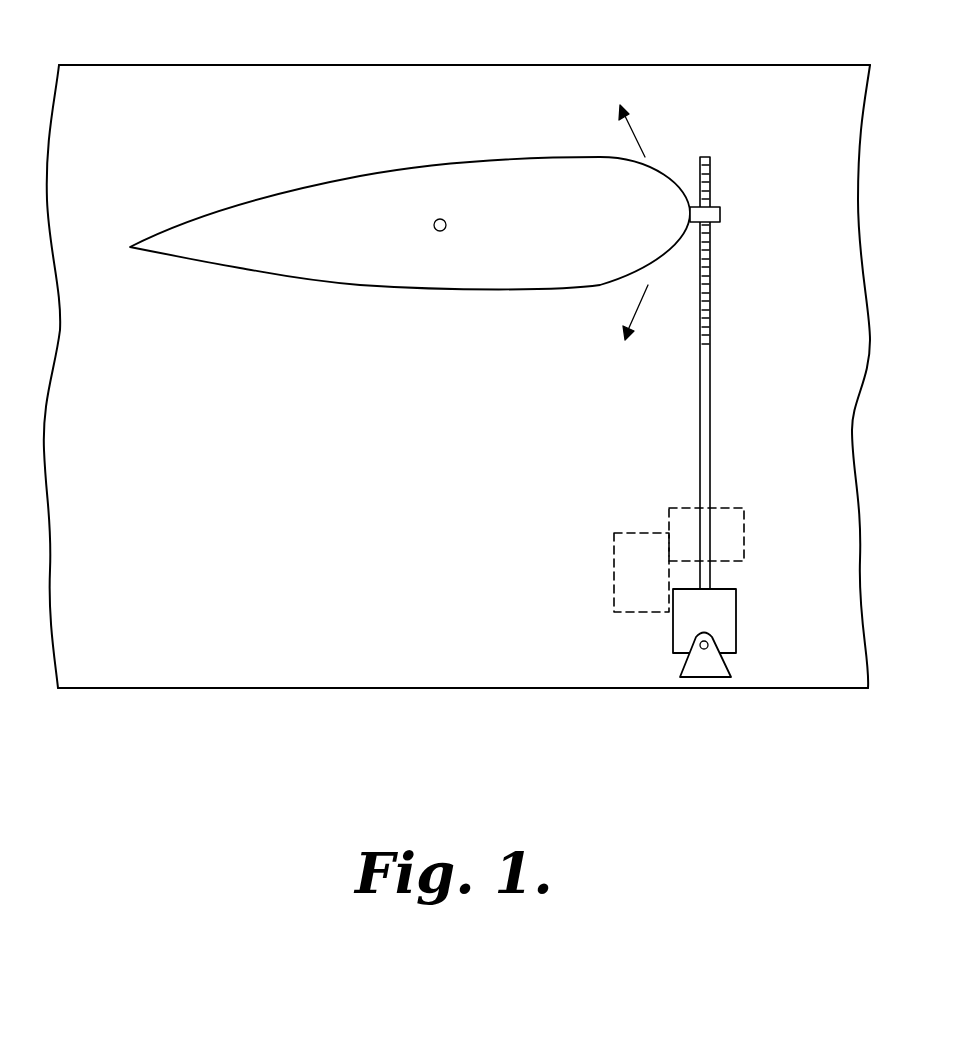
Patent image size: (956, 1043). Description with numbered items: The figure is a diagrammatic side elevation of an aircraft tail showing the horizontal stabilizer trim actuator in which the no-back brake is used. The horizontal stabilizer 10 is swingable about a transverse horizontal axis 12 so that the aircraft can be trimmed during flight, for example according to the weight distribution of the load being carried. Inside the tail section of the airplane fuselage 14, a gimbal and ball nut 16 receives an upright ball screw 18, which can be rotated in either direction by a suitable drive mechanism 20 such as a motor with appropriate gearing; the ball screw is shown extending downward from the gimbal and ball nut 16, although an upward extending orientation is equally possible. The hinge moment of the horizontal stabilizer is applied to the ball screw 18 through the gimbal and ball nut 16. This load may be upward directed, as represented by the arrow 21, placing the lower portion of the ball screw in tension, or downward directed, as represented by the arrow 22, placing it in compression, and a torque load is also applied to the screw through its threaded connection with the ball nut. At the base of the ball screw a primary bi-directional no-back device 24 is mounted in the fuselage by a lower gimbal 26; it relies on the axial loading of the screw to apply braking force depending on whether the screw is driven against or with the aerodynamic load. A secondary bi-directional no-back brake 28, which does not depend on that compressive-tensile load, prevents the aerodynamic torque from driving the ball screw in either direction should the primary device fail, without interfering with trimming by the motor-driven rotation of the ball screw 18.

The horizontal stabilizer 10 is at (495, 158).
The transverse horizontal axis 12 is at (437, 231).
The airplane fuselage 14 is at (760, 65).
The gimbal and ball nut 16 is at (720, 215).
The ball screw 18 is at (710, 405).
The drive mechanism 20 is at (633, 533).
The arrow 21 is at (638, 142).
The arrow 22 is at (638, 307).
The primary bi-directional no-back device 24 is at (736, 605).
The lower gimbal 26 is at (715, 667).
The secondary bi-directional no-back brake 28 is at (745, 543).